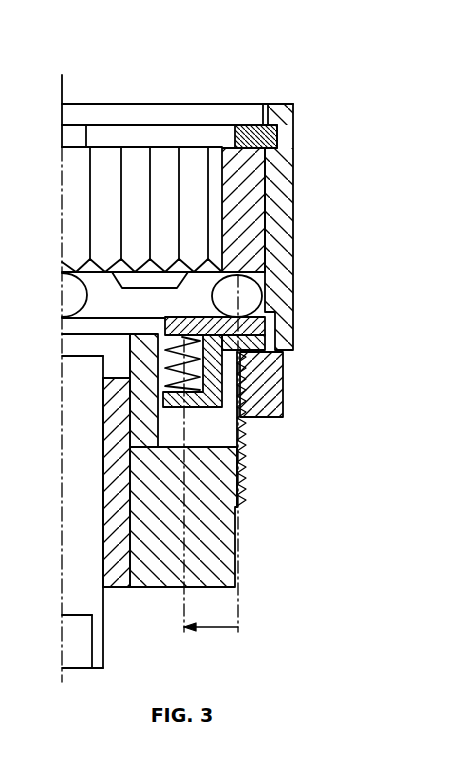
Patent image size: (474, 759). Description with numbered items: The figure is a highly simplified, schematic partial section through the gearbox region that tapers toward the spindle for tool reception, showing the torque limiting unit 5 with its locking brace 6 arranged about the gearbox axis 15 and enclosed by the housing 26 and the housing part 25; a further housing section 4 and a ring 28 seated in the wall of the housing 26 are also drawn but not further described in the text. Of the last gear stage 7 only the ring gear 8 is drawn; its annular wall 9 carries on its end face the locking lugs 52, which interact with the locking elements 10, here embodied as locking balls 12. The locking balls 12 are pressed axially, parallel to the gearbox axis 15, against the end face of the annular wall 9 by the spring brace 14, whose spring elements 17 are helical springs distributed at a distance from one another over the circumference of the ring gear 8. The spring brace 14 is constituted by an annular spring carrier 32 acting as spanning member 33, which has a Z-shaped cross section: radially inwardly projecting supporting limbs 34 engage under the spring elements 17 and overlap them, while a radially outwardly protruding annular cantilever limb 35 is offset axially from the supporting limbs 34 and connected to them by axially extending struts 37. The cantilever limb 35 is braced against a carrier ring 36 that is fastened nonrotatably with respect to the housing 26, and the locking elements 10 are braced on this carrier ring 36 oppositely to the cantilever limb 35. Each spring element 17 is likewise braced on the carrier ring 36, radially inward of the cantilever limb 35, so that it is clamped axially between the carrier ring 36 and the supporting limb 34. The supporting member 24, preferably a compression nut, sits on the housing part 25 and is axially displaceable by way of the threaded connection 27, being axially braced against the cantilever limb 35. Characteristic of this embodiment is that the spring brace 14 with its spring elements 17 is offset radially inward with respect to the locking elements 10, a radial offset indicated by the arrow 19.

The housing 4 is at (78, 591).
The torque limiting unit 5 is at (310, 111).
The locking brace 6 is at (297, 351).
The last gear stage 7 is at (193, 131).
The ring gear 8 is at (247, 180).
The annular wall 9 is at (247, 203).
The locking elements 10 is at (74, 297).
The locking balls 12 is at (253, 295).
The spring brace 14 is at (147, 372).
The gearbox axis 15 is at (63, 90).
The spring elements 17 is at (130, 344).
The arrow 19 is at (218, 627).
The supporting member 24 is at (262, 404).
The housing part 25 is at (213, 555).
The housing 26 is at (280, 140).
The threaded connection 27 is at (248, 493).
The ring 28 is at (255, 130).
The annular spring carrier 32 is at (209, 410).
The spanning member 33 is at (151, 394).
The supporting limbs 34 is at (163, 397).
The cantilever limb 35 is at (279, 343).
The carrier ring 36 is at (276, 326).
The struts 37 is at (218, 379).
The locking lugs 52 is at (147, 280).